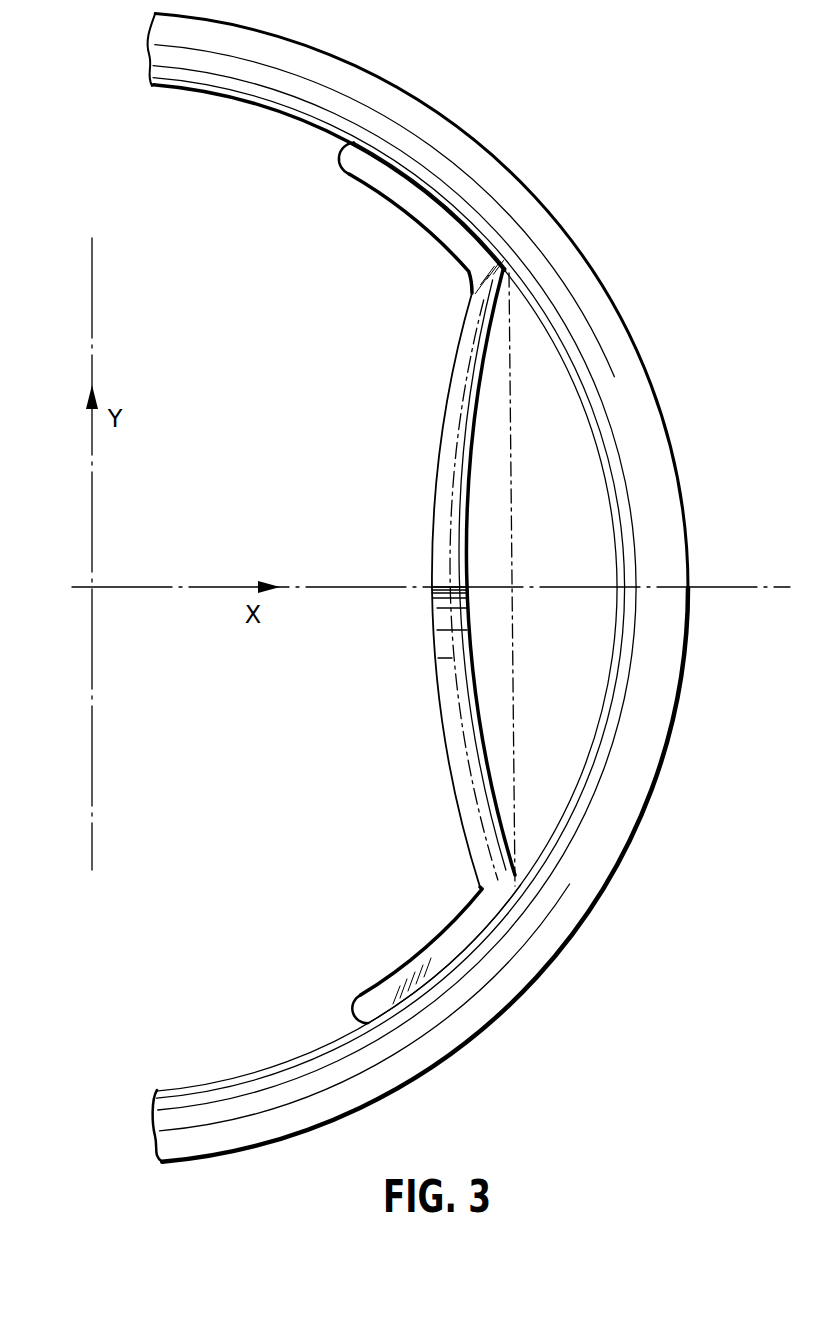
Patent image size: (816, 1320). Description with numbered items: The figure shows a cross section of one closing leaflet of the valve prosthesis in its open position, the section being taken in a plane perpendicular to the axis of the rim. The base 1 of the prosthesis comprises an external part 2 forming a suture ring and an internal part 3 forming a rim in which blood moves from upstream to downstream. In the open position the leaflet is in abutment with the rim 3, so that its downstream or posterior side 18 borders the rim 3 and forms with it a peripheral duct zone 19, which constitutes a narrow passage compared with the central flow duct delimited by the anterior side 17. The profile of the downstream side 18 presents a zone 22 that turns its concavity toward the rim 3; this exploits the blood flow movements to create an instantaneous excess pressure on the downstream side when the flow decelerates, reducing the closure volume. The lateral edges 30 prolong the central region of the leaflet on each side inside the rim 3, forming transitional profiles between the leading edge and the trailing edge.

The base 1 is at (522, 92).
The external part 2 is at (518, 184).
The internal part 3 is at (547, 327).
The anterior side 17 is at (432, 670).
The posterior side 18 is at (497, 670).
The peripheral duct zone 19 is at (559, 412).
The zone 22 is at (468, 553).
The lateral edges 30 is at (388, 183).